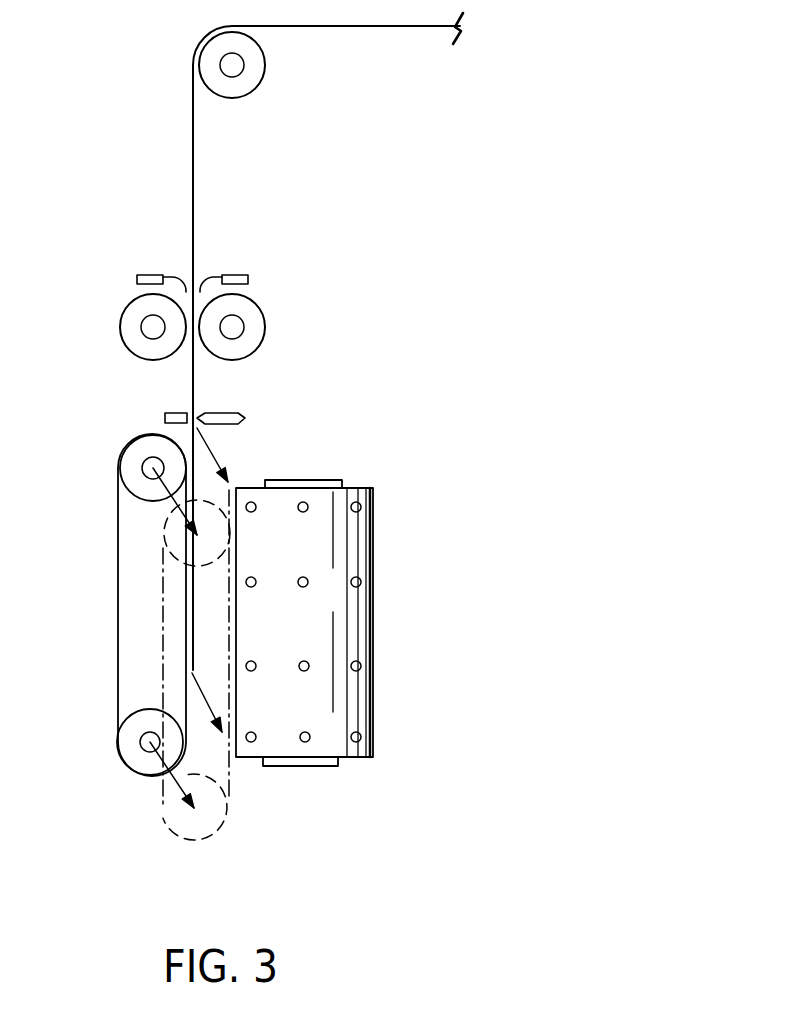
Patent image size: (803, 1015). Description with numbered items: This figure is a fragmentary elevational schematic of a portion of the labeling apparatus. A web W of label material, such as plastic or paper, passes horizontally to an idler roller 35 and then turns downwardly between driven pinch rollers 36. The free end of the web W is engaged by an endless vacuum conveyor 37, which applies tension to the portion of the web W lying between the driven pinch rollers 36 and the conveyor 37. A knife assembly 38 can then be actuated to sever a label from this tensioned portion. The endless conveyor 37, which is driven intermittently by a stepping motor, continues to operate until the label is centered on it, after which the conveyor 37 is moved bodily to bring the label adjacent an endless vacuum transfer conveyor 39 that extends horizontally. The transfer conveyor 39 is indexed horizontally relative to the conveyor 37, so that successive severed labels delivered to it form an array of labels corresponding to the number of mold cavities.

The web W is at (406, 31).
The idler roller 35 is at (250, 68).
The driven pinch rollers 36 is at (128, 323).
The endless vacuum conveyor 37 is at (103, 678).
The knife assembly 38 is at (245, 416).
The endless vacuum transfer conveyor 39 is at (350, 619).